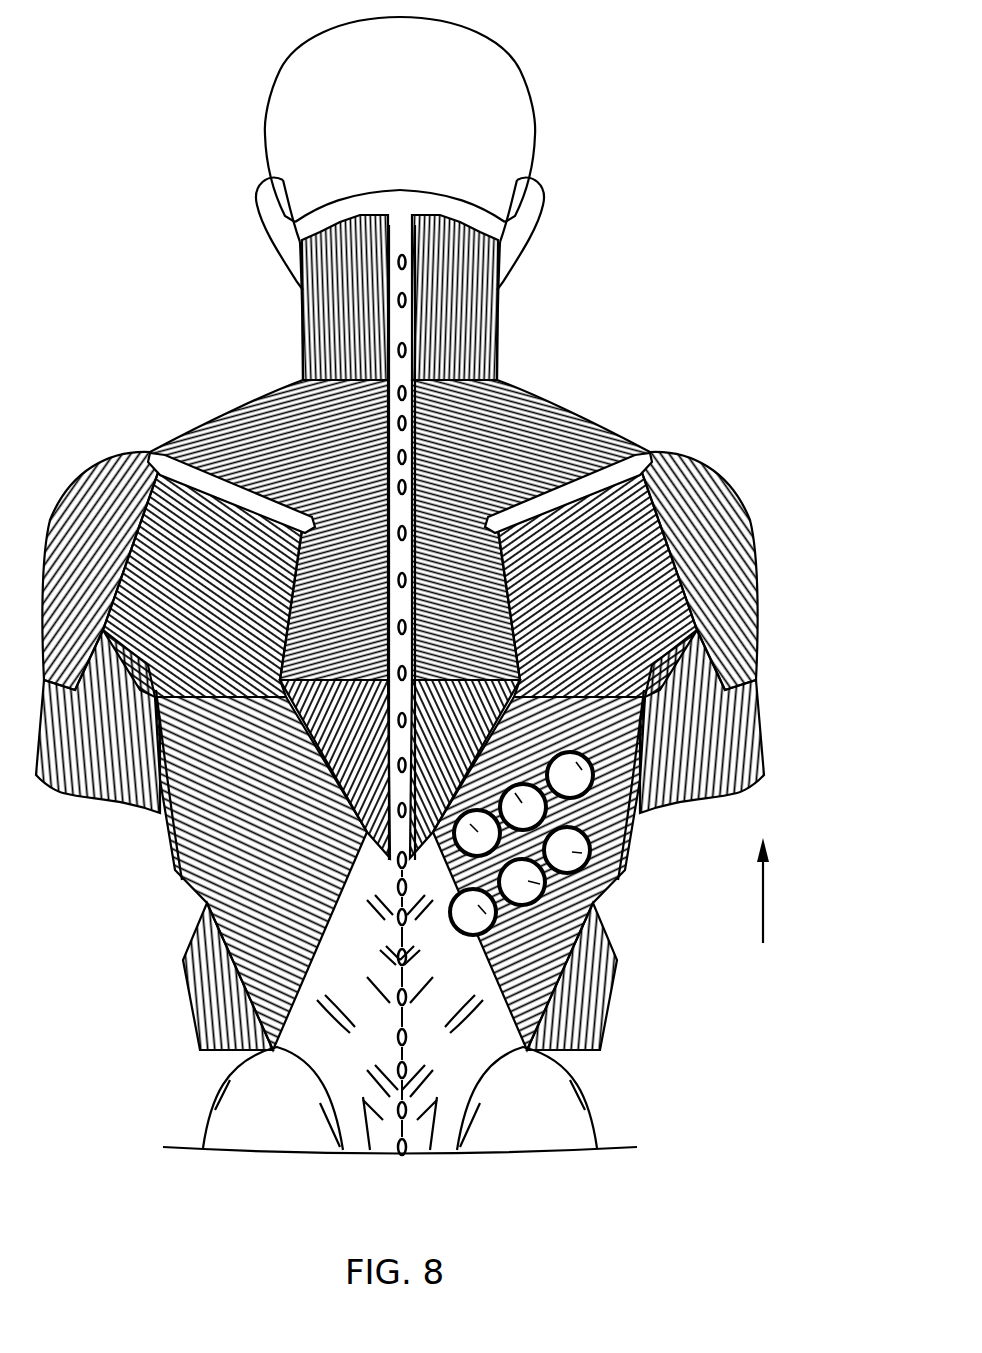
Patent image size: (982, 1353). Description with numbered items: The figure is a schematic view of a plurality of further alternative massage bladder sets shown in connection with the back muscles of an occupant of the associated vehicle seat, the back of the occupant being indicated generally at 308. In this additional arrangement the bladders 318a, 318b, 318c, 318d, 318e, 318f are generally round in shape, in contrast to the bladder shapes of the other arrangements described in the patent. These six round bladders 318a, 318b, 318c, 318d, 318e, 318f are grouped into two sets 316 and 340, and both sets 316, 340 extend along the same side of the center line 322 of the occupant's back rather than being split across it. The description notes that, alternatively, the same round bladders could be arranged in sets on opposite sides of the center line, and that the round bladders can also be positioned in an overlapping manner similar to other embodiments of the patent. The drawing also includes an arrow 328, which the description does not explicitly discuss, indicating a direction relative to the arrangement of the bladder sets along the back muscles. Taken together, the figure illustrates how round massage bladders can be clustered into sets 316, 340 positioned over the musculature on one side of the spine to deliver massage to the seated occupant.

The back of patient body 308 is at (594, 370).
The bladder set 316 is at (466, 952).
The bladder 318a is at (492, 915).
The bladder 318b is at (540, 884).
The bladder 318c is at (585, 852).
The bladder 318d is at (487, 815).
The bladder 318e is at (525, 790).
The bladder 318f is at (578, 762).
The center line 322 is at (400, 973).
The superior direction arrow 328 is at (763, 905).
The bladder set 340 is at (622, 772).